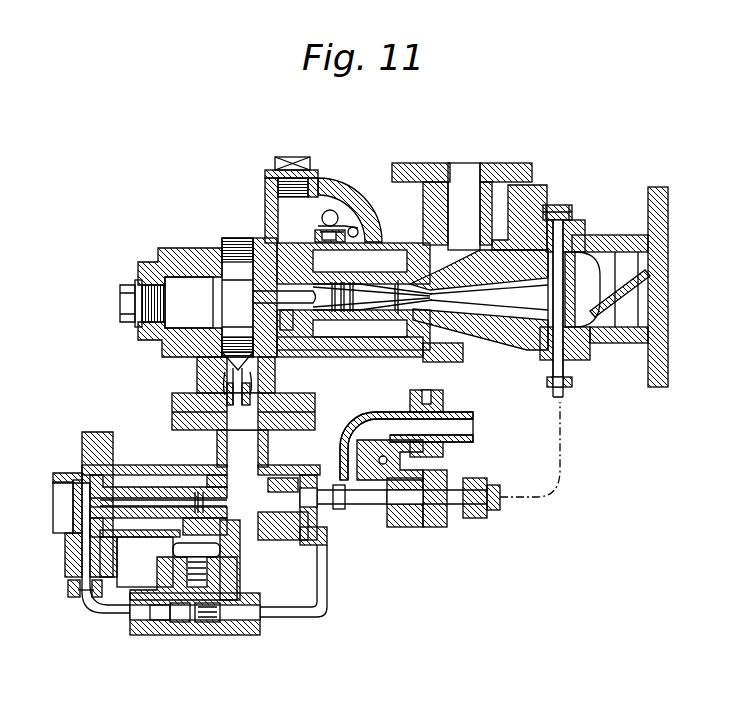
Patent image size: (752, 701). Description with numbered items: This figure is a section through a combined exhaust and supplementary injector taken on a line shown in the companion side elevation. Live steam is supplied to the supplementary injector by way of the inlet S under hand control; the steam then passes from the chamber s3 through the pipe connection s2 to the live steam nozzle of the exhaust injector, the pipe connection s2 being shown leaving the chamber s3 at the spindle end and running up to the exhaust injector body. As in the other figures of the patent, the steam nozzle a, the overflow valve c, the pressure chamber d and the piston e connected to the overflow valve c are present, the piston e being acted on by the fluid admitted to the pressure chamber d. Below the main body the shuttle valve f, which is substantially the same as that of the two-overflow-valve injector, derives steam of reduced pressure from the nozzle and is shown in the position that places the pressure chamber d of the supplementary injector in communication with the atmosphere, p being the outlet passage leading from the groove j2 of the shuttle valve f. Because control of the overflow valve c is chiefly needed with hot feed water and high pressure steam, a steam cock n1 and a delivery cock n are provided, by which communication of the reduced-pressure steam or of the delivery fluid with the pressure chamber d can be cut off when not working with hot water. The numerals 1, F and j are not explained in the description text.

The inlet passage 1 is at (470, 195).
The inlet S is at (394, 416).
The pipe connection s2 is at (562, 428).
The chamber s3 is at (335, 518).
The steam nozzle a is at (258, 495).
The overflow valve c is at (196, 553).
The chamber F is at (280, 555).
The piston e is at (160, 578).
The pressure chamber d is at (158, 592).
The delivery cock n is at (95, 620).
The steam cock n1 is at (315, 612).
The shuttle valve f is at (165, 625).
The outlet passage p is at (185, 625).
The groove j2 is at (210, 625).
The valve cylinder j is at (240, 635).